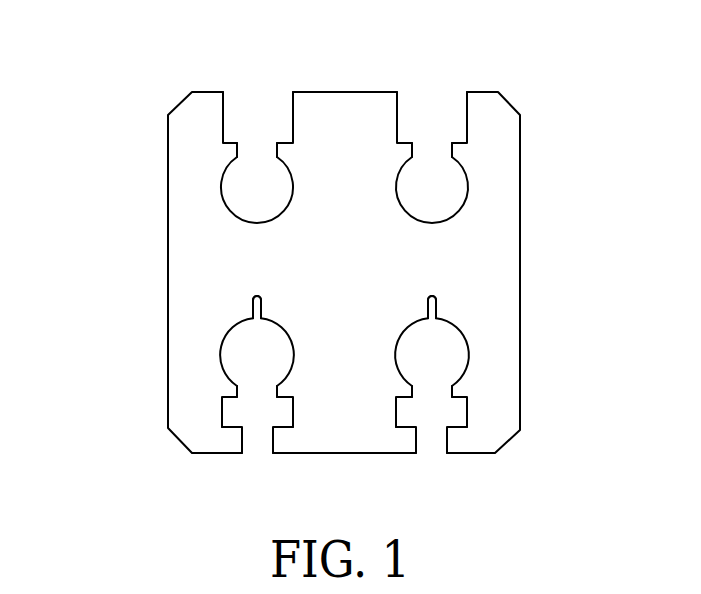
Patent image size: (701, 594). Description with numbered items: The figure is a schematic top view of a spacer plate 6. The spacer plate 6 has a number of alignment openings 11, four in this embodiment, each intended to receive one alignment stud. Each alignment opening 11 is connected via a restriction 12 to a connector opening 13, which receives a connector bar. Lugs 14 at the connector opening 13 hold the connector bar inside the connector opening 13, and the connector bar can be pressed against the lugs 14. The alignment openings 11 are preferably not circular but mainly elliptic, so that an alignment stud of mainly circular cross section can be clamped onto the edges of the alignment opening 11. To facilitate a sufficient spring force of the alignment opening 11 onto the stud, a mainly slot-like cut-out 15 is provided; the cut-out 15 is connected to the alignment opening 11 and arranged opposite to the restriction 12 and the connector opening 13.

The spacer plate 6 is at (122, 77).
The alignment opening 11 is at (243, 197).
The restriction 12 is at (255, 143).
The connector opening 13 is at (258, 108).
The lug 14 is at (235, 443).
The slot-like cut-out 15 is at (253, 298).